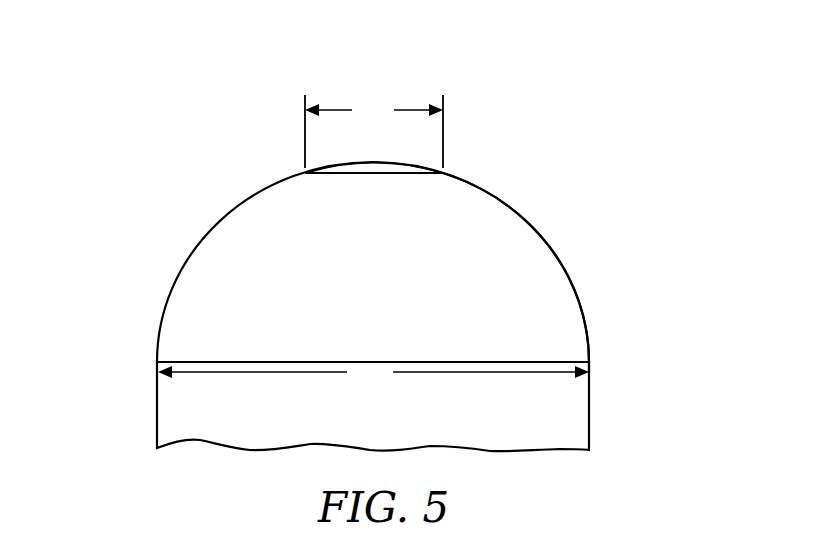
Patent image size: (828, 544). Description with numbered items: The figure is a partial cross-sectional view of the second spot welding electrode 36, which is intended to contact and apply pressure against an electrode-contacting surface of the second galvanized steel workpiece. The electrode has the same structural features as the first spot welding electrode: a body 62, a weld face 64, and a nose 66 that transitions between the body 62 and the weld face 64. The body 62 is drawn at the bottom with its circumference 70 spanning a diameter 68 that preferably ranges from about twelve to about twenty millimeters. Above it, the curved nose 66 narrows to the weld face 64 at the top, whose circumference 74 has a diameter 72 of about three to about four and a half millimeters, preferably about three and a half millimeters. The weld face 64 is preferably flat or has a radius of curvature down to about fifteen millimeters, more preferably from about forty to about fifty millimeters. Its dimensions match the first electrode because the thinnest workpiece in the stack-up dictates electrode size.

The second spot welding electrode 36 is at (158, 250).
The body 62 is at (177, 389).
The weld face 64 is at (399, 158).
The nose 66 is at (485, 270).
The diameter 68 is at (350, 387).
The circumference 70 is at (528, 362).
The diameter 72 is at (374, 131).
The circumference 74 is at (341, 174).